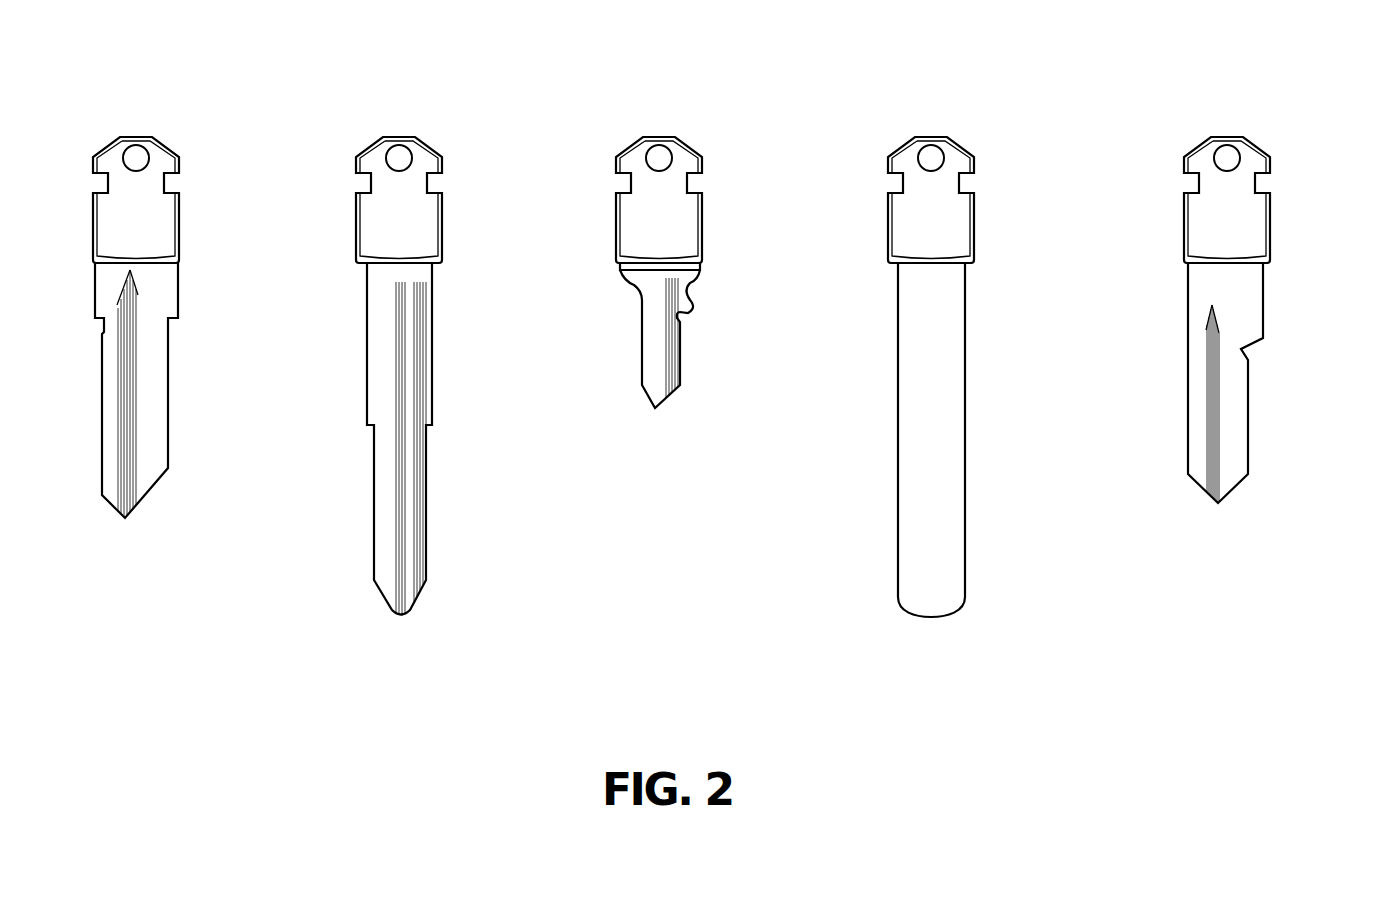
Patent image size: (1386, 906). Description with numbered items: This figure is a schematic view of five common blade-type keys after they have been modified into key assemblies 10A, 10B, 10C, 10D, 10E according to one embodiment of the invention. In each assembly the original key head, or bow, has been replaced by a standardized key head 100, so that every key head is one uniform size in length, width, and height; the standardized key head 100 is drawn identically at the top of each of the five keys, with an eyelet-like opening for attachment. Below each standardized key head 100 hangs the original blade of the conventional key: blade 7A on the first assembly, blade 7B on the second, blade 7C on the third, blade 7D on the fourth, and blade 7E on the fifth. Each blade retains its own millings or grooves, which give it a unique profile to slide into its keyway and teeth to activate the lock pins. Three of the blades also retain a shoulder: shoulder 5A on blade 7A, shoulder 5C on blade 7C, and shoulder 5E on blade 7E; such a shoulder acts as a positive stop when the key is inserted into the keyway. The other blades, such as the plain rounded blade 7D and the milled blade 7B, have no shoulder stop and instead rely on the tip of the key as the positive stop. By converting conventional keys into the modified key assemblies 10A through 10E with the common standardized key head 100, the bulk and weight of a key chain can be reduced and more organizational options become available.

The modified key assembly 10A is at (129, 106).
The modified key assembly 10B is at (392, 106).
The modified key assembly 10C is at (652, 106).
The modified key assembly 10D is at (924, 106).
The modified key assembly 10E is at (1220, 106).
The standardized key head 100 is at (156, 232).
The shoulder 5A is at (178, 318).
The shoulder 5C is at (693, 311).
The shoulder 5E is at (1262, 340).
The blade 7A is at (153, 394).
The blade 7B is at (424, 397).
The blade 7C is at (668, 344).
The blade 7D is at (953, 405).
The blade 7E is at (1238, 410).